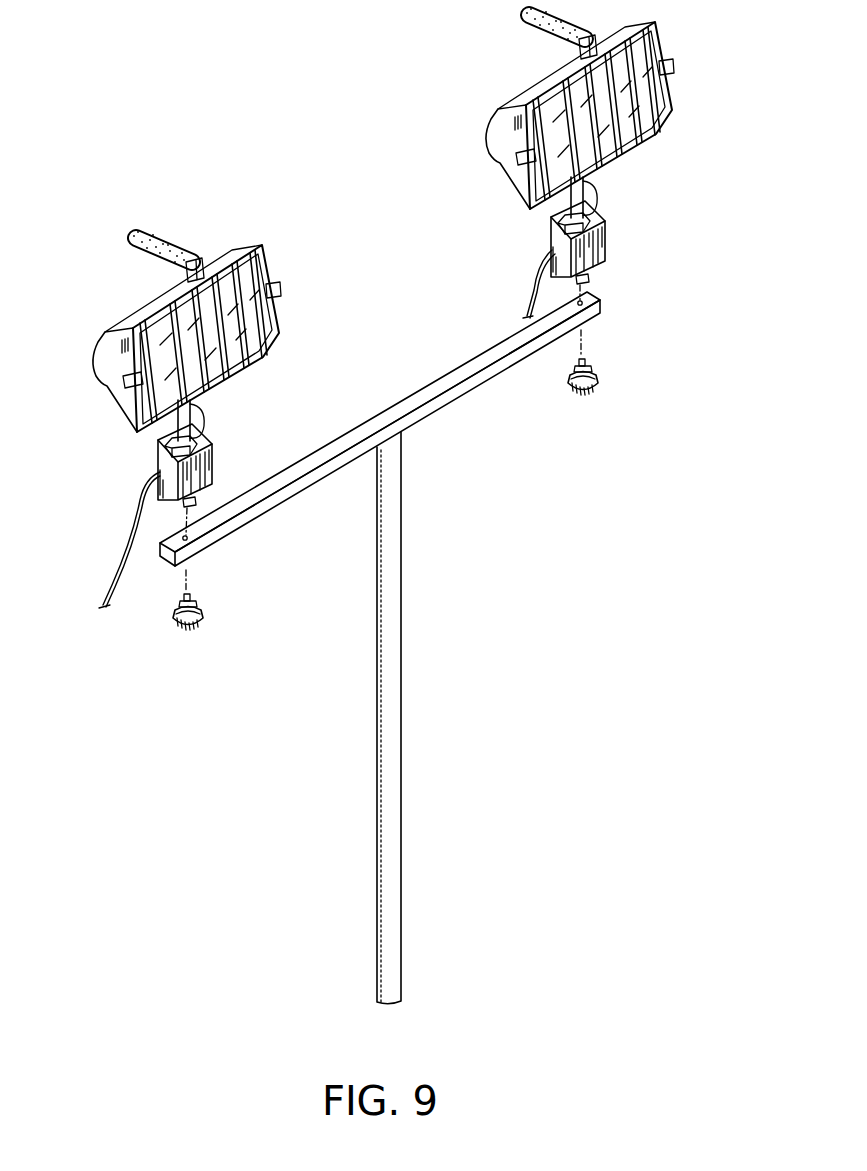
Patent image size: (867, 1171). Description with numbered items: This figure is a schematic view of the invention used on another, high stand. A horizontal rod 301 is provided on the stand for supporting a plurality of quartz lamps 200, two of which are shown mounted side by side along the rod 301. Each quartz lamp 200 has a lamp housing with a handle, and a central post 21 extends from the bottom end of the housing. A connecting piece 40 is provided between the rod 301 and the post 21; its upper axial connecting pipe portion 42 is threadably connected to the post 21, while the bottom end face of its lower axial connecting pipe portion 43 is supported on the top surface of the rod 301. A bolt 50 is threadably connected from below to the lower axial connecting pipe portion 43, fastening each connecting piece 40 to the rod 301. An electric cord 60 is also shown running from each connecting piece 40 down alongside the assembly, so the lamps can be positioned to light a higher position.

The quartz lamp 200 is at (108, 395).
The central post 21 is at (196, 410).
The upper axial connecting pipe portion 42 is at (206, 443).
The connecting piece 40 is at (204, 462).
The lower axial connecting pipe portion 43 is at (194, 497).
The bolt 50 is at (193, 597).
The electric cord 60 is at (127, 545).
The horizontal rod 301 is at (428, 403).